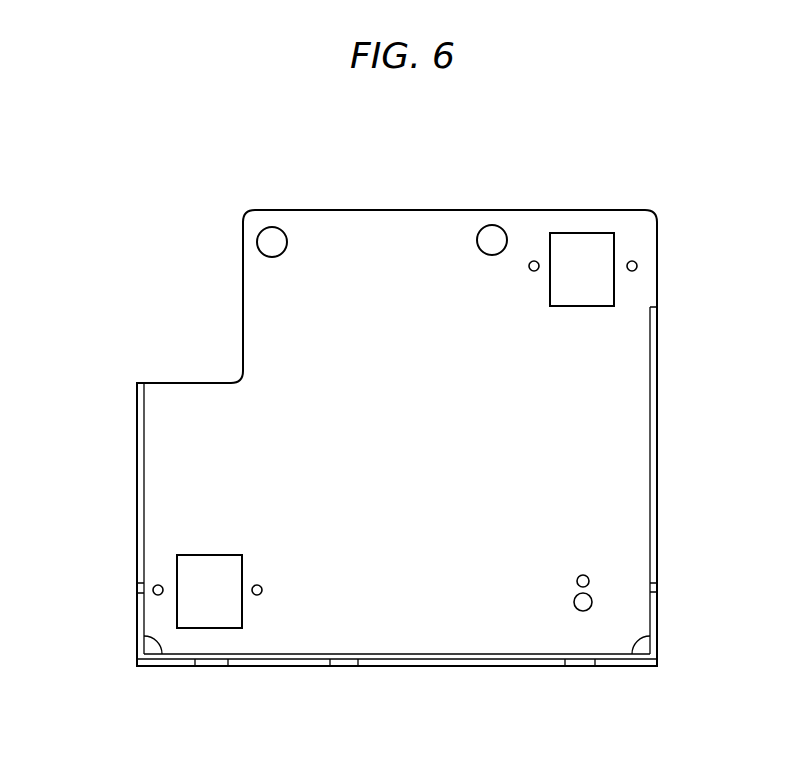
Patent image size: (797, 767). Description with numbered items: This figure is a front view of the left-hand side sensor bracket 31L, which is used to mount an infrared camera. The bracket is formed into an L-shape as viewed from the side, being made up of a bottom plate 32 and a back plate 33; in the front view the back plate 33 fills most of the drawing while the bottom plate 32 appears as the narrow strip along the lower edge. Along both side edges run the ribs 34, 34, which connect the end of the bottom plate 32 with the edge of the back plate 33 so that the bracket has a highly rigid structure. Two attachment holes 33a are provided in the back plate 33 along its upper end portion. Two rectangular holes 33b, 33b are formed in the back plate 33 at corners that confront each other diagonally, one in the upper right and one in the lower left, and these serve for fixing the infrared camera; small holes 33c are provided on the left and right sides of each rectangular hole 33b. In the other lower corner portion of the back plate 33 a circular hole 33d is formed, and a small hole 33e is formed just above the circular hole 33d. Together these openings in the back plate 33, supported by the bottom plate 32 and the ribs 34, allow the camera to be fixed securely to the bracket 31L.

The left-hand side sensor bracket 31L is at (374, 186).
The bottom plate 32 is at (413, 667).
The back plate 33 is at (433, 210).
The attachment holes 33a is at (268, 228).
The rectangular holes 33b is at (590, 250).
The small holes 33c is at (645, 265).
The circular hole 33d is at (600, 601).
The small hole 33e is at (597, 580).
The ribs 34 is at (140, 471).